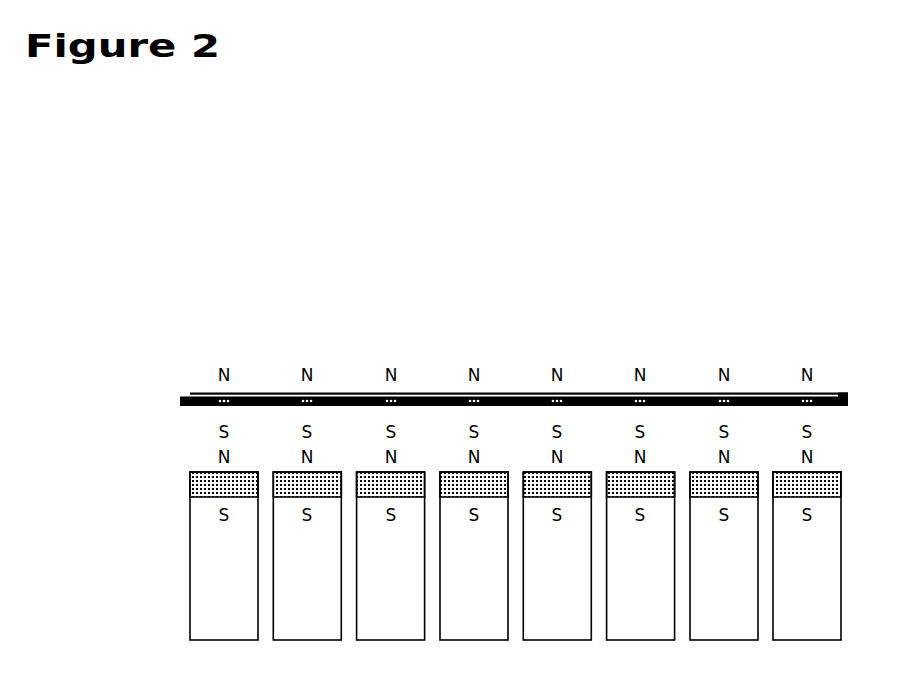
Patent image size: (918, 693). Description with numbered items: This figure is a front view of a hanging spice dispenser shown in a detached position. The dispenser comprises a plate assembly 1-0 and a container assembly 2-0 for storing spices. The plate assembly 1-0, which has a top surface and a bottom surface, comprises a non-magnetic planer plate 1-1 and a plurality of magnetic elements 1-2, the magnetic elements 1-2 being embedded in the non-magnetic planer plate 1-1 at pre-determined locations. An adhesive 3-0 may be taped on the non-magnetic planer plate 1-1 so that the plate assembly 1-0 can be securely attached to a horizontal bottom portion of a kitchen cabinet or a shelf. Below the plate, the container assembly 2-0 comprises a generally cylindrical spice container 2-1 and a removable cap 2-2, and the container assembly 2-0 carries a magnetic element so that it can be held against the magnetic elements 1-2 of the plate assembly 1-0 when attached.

The plate assembly 1-0 is at (172, 386).
The non-magnetic planer plate 1-1 is at (341, 387).
The magnetic elements 1-2 is at (573, 387).
The container assembly 2-0 is at (174, 556).
The spice container 2-1 is at (824, 552).
The removable cap 2-2 is at (824, 484).
The adhesive 3-0 is at (772, 386).